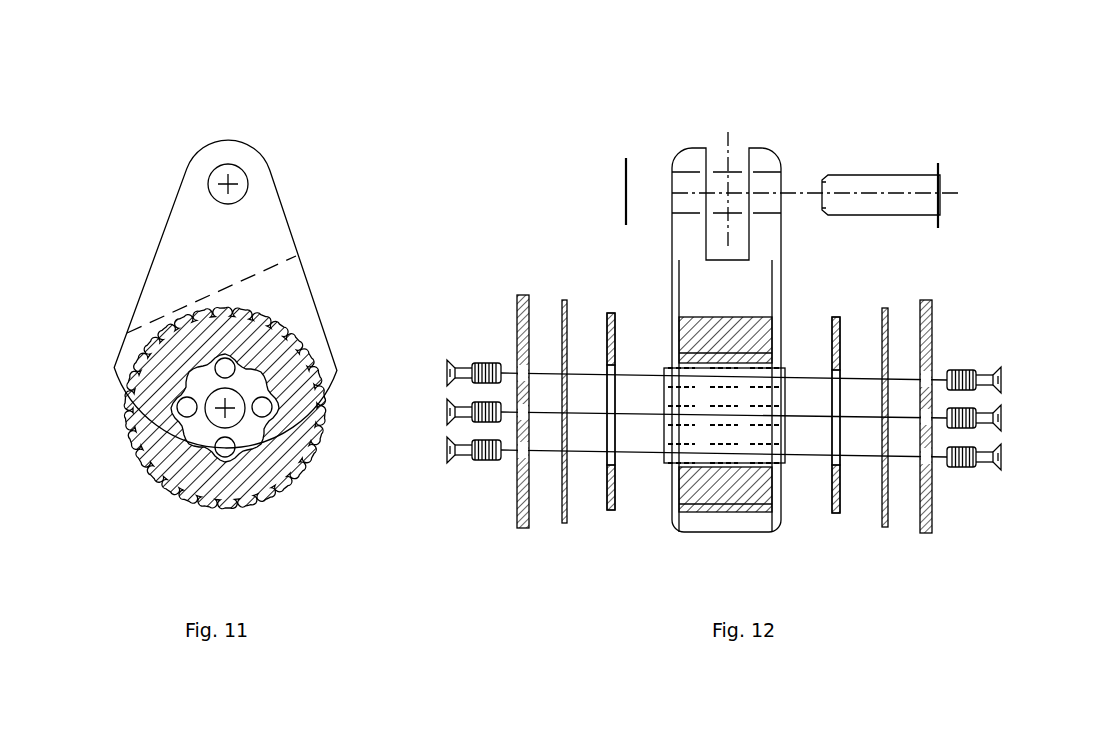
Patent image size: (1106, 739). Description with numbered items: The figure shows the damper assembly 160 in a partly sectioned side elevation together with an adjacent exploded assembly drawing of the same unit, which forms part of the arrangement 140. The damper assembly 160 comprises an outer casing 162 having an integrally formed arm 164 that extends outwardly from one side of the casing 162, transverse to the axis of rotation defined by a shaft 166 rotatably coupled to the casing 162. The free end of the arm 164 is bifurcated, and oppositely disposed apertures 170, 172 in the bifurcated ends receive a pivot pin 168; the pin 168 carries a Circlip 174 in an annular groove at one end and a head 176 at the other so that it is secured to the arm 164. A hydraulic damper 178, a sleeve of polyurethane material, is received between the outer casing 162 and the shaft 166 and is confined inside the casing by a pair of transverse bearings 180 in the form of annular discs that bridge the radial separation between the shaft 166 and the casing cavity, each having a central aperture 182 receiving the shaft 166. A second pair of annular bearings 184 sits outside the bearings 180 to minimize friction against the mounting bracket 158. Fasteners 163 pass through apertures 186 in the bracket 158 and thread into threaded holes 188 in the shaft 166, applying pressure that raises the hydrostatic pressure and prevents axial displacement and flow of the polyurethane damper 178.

In FIG. 12, the drive assembly 140 is at (866, 55).
In FIG. 12, the mounting bracket 158 is at (933, 516).
In FIG. 11, the damper assembly 160 is at (181, 110).
In FIG. 11, the outer casing 162 is at (338, 371).
In FIG. 12, the outer casing 162 is at (762, 532).
In FIG. 12, the fasteners 163 is at (476, 332).
In FIG. 11, the arm 164 is at (286, 218).
In FIG. 12, the arm 164 is at (706, 118).
In FIG. 11, the shaft 166 is at (217, 362).
In FIG. 12, the shaft 166 is at (666, 466).
In FIG. 12, the pivot pin 168 is at (852, 176).
In FIG. 11, the aperture 170 is at (247, 177).
In FIG. 12, the aperture 170 is at (672, 213).
In FIG. 12, the aperture 172 is at (770, 218).
In FIG. 12, the Circlip 174 is at (626, 170).
In FIG. 12, the head 176 is at (938, 226).
In FIG. 11, the hydraulic damper 178 is at (296, 470).
In FIG. 12, the transverse bearings 180 is at (611, 332).
In FIG. 12, the central aperture 182 is at (616, 372).
In FIG. 12, the annular bearings 184 is at (566, 345).
In FIG. 12, the apertures 186 is at (931, 376).
In FIG. 11, the threaded holes 188 is at (215, 447).